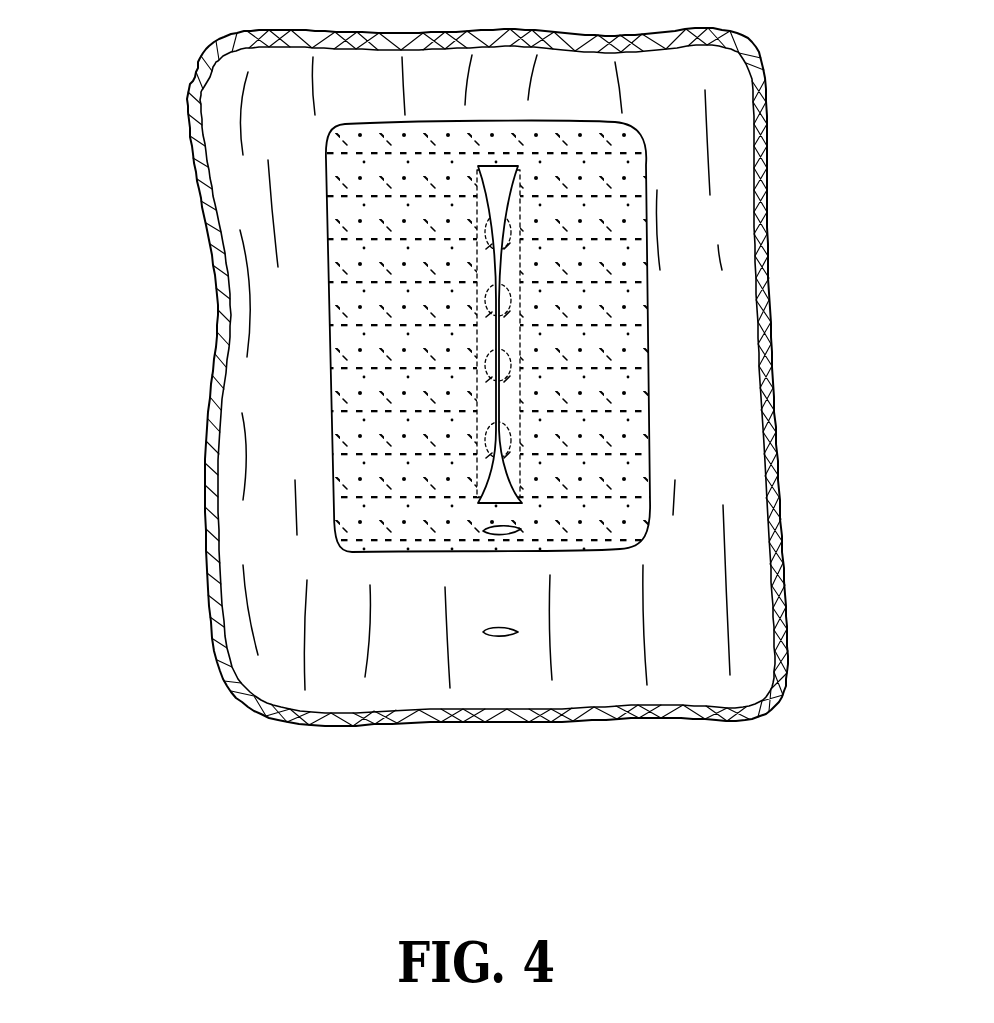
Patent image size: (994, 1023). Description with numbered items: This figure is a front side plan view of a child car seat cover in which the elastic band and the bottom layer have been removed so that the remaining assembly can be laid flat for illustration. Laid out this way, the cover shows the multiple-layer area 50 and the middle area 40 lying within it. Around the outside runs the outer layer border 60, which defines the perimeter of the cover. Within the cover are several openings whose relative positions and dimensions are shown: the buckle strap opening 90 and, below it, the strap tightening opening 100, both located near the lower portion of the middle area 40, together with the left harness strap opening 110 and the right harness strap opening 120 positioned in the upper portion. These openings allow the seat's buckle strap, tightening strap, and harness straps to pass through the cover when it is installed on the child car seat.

The middle area 40 is at (595, 168).
The multiple-layer area 50 is at (645, 389).
The outer layer border 60 is at (208, 581).
The buckle strap opening 90 is at (521, 530).
The strap tightening opening 100 is at (518, 632).
The left harness strap opening 110 is at (523, 271).
The right harness strap opening 120 is at (476, 273).